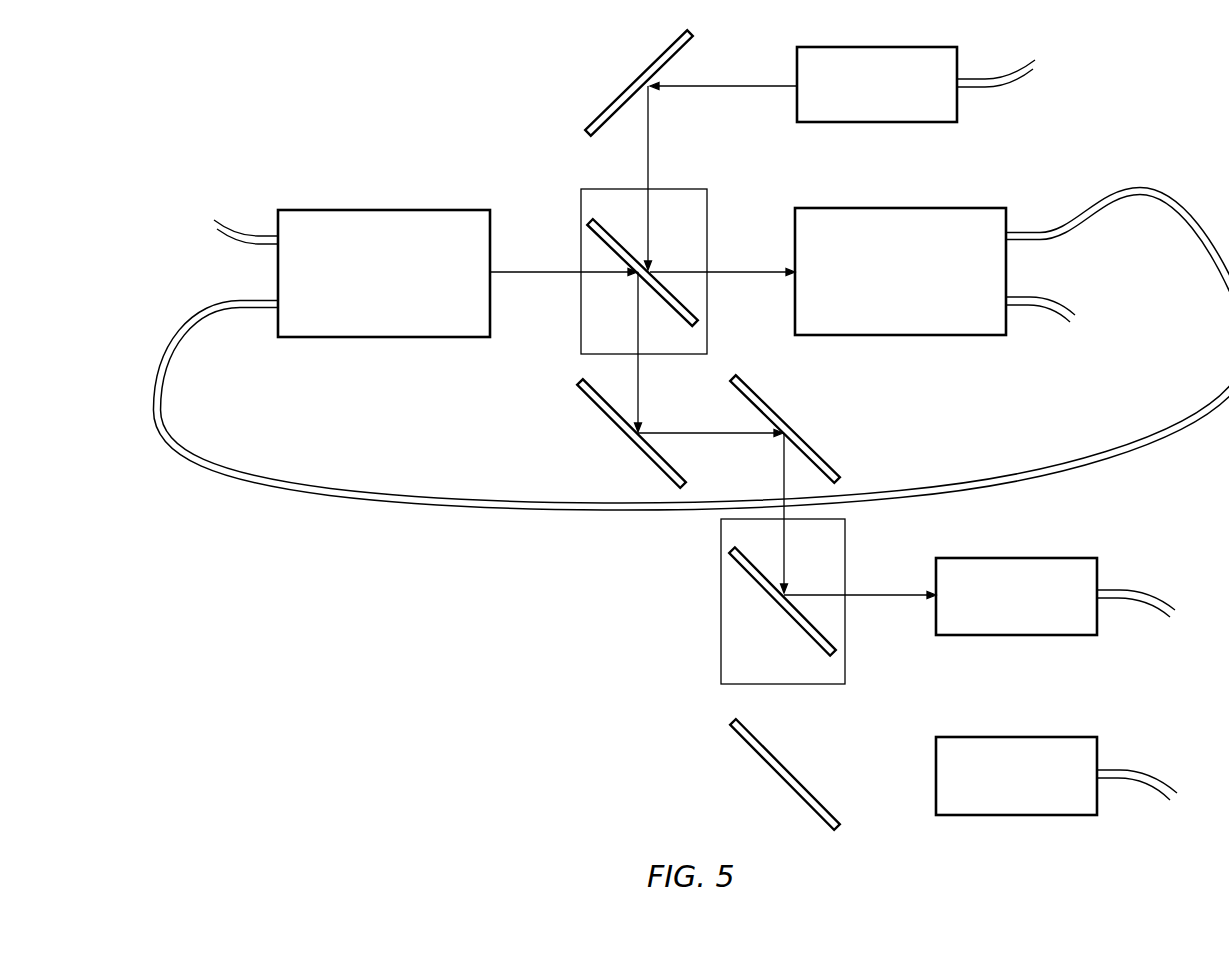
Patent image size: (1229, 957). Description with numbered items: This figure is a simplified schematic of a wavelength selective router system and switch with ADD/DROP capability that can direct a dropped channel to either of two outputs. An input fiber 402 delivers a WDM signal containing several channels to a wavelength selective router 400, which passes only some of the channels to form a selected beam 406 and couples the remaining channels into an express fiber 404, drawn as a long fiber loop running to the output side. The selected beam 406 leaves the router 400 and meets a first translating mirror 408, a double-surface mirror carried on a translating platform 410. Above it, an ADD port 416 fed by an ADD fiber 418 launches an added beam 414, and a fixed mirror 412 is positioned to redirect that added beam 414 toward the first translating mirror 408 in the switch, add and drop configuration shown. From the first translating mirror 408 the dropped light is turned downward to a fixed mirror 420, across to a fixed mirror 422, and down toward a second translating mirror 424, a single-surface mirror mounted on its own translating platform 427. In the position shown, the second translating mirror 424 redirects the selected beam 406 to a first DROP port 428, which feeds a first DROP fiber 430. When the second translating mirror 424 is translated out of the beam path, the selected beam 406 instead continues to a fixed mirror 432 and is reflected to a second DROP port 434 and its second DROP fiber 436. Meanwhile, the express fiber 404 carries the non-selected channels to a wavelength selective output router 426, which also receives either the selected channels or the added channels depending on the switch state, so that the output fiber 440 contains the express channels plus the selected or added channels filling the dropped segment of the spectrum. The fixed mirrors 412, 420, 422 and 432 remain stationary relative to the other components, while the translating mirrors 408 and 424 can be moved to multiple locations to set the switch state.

The wavelength selective router 400 is at (393, 210).
The input fiber 402 is at (220, 243).
The express fiber 404 is at (398, 503).
The selected beam 406 is at (541, 280).
The first translating mirror 408 is at (600, 222).
The translating platform 410 is at (708, 324).
The fixed mirror 412 is at (637, 76).
The added beam 414 is at (738, 84).
The ADD port 416 is at (877, 47).
The ADD fiber 418 is at (978, 90).
The fixed mirror 420 is at (606, 420).
The fixed mirror 422 is at (805, 430).
The second translating mirror 424 is at (740, 560).
The wavelength selective output router 426 is at (878, 207).
The translating platform 427 is at (720, 642).
The first DROP port 428 is at (1016, 557).
The first DROP fiber 430 is at (1128, 590).
The fixed mirror 432 is at (780, 778).
The second DROP port 434 is at (1018, 737).
The second DROP fiber 436 is at (1128, 770).
The output fiber 440 is at (1027, 305).